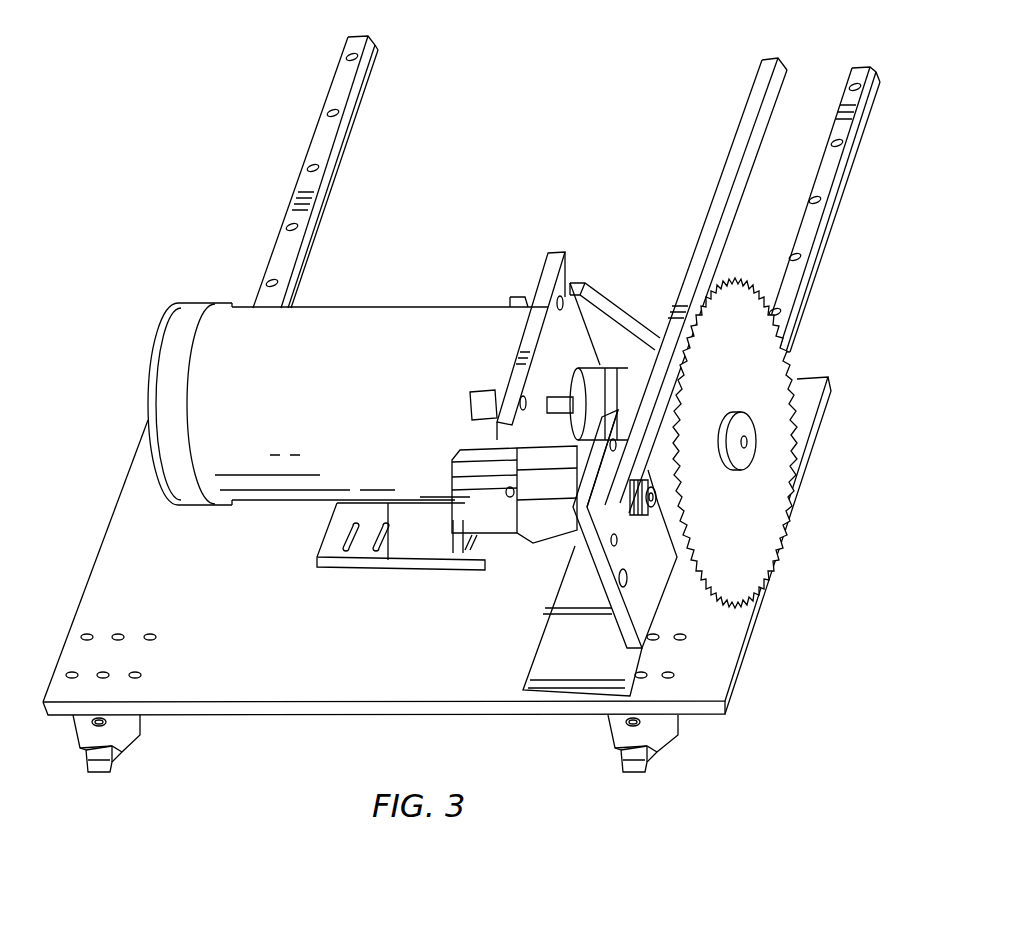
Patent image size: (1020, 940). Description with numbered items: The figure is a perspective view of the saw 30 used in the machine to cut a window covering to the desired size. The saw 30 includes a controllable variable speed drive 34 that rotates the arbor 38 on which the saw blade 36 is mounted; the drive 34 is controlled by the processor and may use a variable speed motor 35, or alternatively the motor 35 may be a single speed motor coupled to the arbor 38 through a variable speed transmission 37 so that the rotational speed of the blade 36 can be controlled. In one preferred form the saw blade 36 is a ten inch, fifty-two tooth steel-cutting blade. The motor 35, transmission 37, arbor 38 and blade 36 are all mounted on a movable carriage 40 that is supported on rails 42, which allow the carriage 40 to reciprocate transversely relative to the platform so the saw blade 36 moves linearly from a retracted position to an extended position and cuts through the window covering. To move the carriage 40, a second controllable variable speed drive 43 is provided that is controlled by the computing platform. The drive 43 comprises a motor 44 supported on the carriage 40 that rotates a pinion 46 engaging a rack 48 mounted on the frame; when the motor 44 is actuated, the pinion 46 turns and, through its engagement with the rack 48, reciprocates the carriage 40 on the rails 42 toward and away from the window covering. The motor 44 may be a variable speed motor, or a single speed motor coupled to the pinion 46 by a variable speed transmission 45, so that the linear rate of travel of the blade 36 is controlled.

The saw 30 is at (576, 122).
The controllable variable speed drive 34 is at (150, 351).
The motor 35 is at (385, 320).
The saw blade 36 is at (772, 352).
The variable speed transmission 37 is at (605, 372).
The arbor 38 is at (748, 442).
The movable carriage 40 is at (225, 715).
The rails 42 is at (308, 148).
The controllable variable speed drive 43 is at (547, 574).
The motor 44 is at (520, 532).
The variable speed transmission 45 is at (560, 592).
The pinion 46 is at (650, 512).
The rack 48 is at (753, 160).